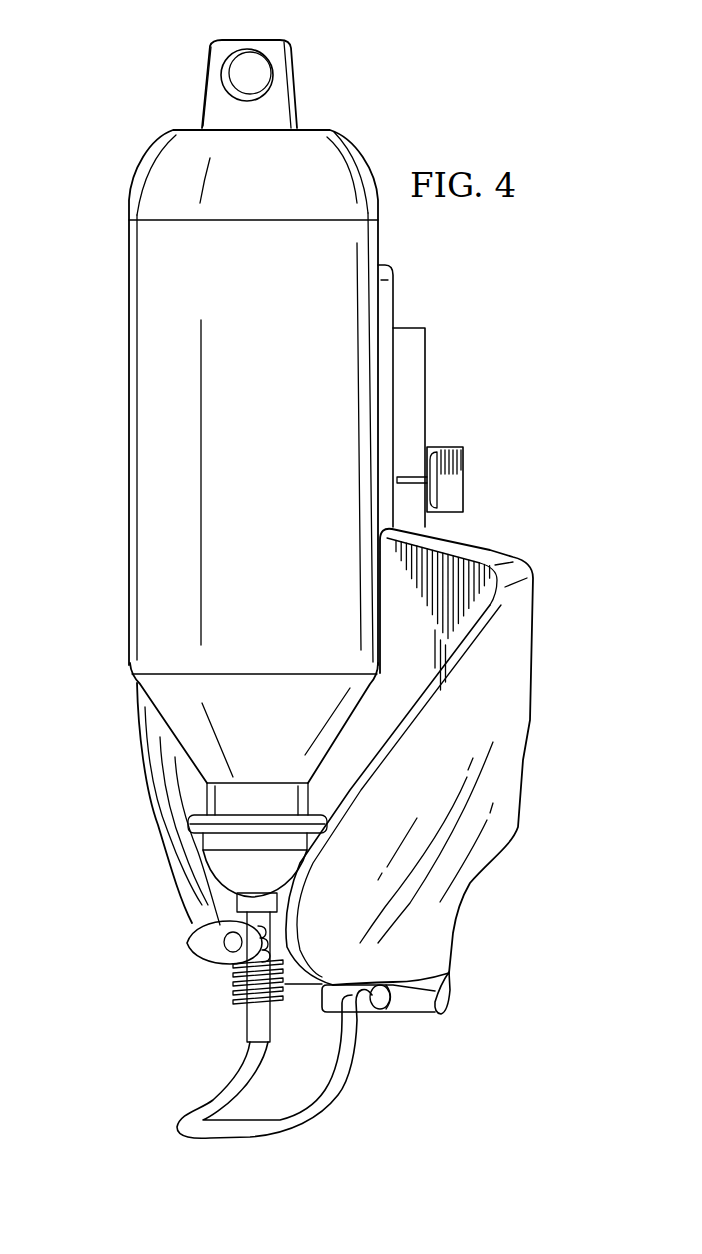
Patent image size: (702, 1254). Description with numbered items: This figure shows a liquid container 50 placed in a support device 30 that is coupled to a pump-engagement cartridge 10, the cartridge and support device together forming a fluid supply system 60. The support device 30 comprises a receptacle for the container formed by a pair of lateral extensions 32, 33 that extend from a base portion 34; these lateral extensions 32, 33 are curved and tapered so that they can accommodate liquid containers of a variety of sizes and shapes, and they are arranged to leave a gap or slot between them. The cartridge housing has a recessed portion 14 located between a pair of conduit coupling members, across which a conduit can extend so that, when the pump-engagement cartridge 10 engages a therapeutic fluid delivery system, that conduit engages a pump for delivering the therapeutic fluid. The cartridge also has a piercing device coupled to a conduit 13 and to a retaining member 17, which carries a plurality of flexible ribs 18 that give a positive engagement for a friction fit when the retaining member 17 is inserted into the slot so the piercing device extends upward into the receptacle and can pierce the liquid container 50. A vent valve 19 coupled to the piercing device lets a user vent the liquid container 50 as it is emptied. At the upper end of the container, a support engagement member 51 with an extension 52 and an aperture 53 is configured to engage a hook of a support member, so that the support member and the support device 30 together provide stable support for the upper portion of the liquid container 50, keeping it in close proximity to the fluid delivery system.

The pump-engagement cartridge 10 is at (508, 416).
The conduit 13 is at (327, 1107).
The recessed portion 14 is at (426, 382).
The retaining member 17 is at (217, 984).
The flexible ribs 18 is at (242, 1000).
The vent valve 19 is at (187, 945).
The support device 30 is at (137, 886).
The lateral extension 32 is at (142, 737).
The lateral extension 33 is at (462, 718).
The base portion 34 is at (484, 548).
The liquid container 50 is at (128, 447).
The support engagement member 51 is at (312, 69).
The extension 52 is at (207, 72).
The aperture 53 is at (258, 58).
The fluid supply system 60 is at (557, 806).